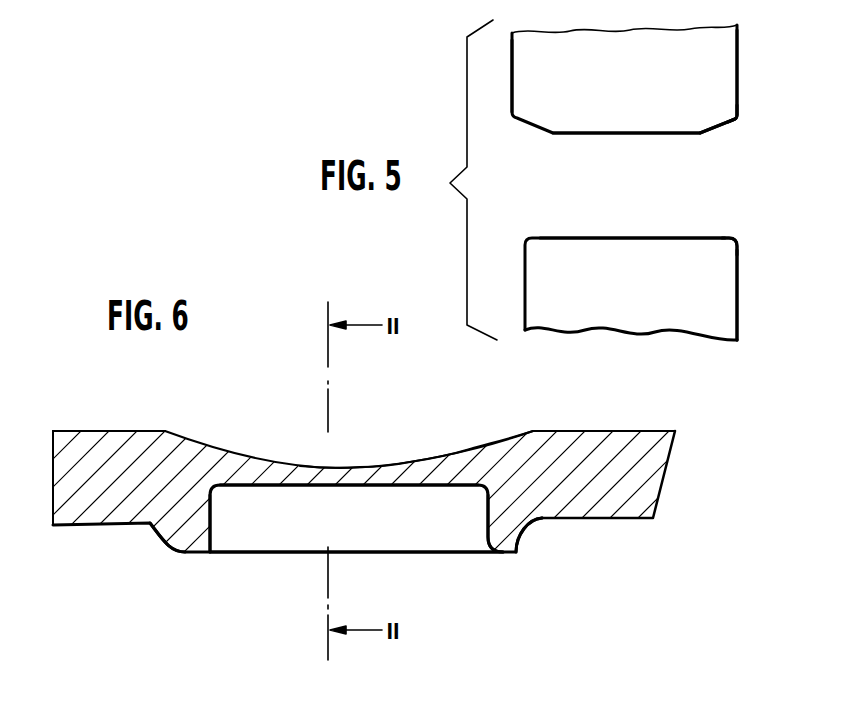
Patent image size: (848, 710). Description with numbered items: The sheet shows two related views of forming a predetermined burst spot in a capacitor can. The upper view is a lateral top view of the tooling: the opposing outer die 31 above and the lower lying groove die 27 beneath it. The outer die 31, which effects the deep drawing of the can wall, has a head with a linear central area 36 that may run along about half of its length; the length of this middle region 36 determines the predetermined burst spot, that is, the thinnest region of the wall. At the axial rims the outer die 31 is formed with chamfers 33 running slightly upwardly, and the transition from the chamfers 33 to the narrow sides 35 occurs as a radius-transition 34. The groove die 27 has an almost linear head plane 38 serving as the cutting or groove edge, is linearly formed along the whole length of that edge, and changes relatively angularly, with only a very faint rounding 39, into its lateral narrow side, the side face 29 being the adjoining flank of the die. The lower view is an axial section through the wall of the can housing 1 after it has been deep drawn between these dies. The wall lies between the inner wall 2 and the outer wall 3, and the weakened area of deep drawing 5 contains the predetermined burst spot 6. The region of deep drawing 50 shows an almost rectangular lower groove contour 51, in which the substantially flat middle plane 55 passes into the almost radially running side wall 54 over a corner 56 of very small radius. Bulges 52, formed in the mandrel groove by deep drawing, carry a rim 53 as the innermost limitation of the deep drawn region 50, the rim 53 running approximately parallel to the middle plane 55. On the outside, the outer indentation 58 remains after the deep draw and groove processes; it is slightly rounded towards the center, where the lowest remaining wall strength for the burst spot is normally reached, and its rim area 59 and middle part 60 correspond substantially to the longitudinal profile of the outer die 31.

In FIG. 6, the can housing 1 is at (627, 440).
In FIG. 6, the inner wall 2 is at (628, 518).
In FIG. 6, the outer wall 3 is at (98, 432).
In FIG. 6, the area of deep drawing 5 is at (268, 432).
In FIG. 6, the predetermined burst spot 6 is at (378, 475).
In FIG. 5, the groove die 27 is at (720, 268).
In FIG. 5, the outer side face of lower insert 29 is at (738, 318).
In FIG. 5, the outer die 31 is at (722, 50).
In FIG. 5, the chamfers 33 is at (718, 128).
In FIG. 5, the radius-transition 34 is at (738, 119).
In FIG. 5, the narrow sides 35 is at (512, 69).
In FIG. 5, the linear central area 36 is at (648, 134).
In FIG. 5, the head plane 38 is at (583, 238).
In FIG. 5, the rounding 39 is at (735, 238).
In FIG. 6, the region of deep drawing 50 is at (527, 490).
In FIG. 6, the lower groove contour 51 is at (302, 528).
In FIG. 6, the bulges 52 is at (517, 530).
In FIG. 6, the rim 53 is at (190, 558).
In FIG. 6, the side wall 54 is at (216, 528).
In FIG. 6, the middle plane 55 is at (375, 490).
In FIG. 6, the corner 56 is at (477, 493).
In FIG. 6, the outer indentation 58 is at (422, 452).
In FIG. 6, the rim area 59 is at (487, 442).
In FIG. 6, the middle part 60 is at (347, 463).